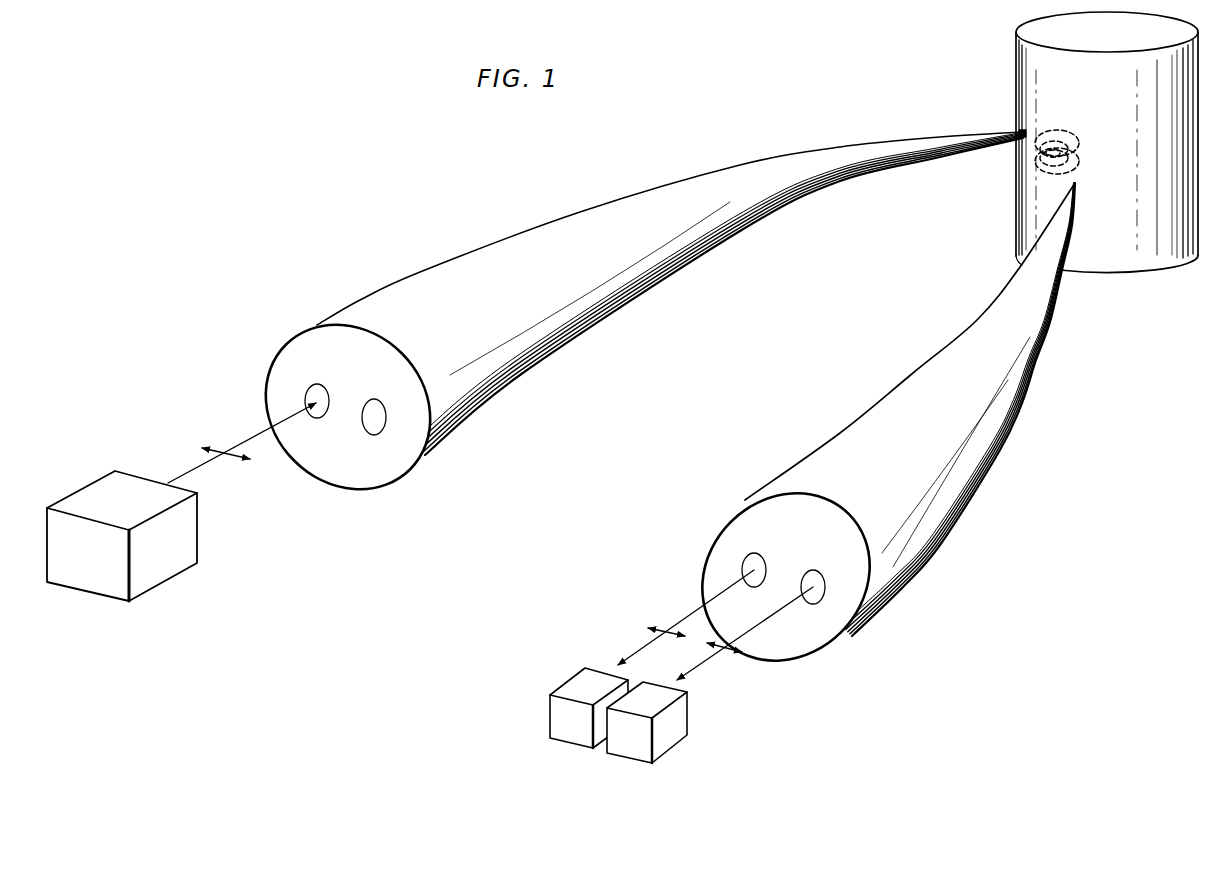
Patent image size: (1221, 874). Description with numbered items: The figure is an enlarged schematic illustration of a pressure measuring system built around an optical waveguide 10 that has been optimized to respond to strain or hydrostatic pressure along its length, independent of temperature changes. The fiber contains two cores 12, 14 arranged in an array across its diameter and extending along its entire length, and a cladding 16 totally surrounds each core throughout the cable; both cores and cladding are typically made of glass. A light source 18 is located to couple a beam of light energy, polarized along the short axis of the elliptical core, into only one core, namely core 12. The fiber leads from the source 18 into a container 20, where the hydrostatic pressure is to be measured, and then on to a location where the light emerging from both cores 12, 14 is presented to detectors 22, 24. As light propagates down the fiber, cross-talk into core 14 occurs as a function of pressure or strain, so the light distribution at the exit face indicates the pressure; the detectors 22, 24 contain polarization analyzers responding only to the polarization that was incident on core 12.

The optical waveguide 10 is at (655, 245).
The core 12 is at (316, 413).
The core 14 is at (371, 429).
The cladding 16 is at (340, 484).
The source 18 is at (80, 582).
The container 20 is at (1030, 188).
The detectors 22 is at (627, 752).
The second detector D2 24 is at (565, 735).